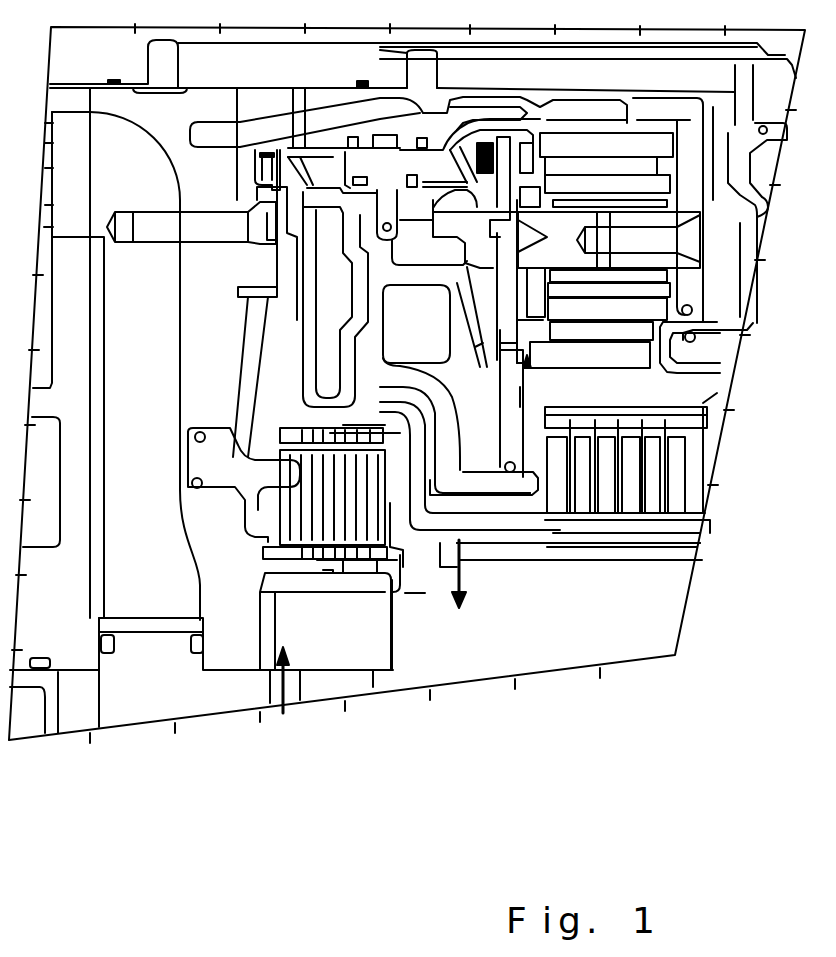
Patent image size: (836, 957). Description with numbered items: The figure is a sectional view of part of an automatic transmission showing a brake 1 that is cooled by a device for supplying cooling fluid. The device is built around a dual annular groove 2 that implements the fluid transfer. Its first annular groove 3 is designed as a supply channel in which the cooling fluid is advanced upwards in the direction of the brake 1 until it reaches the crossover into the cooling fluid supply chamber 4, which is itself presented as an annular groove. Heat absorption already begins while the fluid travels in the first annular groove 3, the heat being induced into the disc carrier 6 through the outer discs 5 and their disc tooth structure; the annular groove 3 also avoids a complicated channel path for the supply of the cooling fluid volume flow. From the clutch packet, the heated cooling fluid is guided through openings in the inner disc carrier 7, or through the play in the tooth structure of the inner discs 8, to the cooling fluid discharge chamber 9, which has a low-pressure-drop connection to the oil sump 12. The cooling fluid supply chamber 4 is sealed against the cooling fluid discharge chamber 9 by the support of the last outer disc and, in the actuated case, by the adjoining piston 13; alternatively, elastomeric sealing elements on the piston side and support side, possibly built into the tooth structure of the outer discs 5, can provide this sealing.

The brake 1 is at (310, 495).
The dual annular groove 2 is at (333, 592).
The first annular groove 3 is at (258, 593).
The cooling fluid supply chamber 4 is at (345, 573).
The outer discs 5 is at (448, 478).
The disc carrier 6 is at (400, 600).
The inner disc carrier 7 is at (330, 433).
The inner discs 8 is at (300, 480).
The cooling fluid discharge chamber 9 is at (416, 548).
The oil sump 12 is at (628, 593).
The piston 13 is at (217, 470).